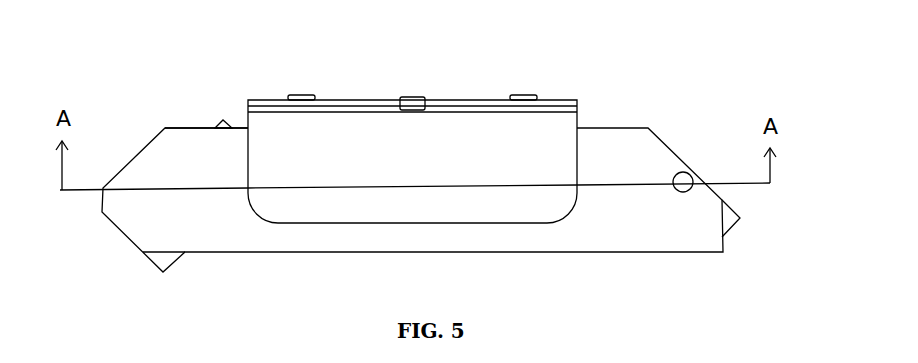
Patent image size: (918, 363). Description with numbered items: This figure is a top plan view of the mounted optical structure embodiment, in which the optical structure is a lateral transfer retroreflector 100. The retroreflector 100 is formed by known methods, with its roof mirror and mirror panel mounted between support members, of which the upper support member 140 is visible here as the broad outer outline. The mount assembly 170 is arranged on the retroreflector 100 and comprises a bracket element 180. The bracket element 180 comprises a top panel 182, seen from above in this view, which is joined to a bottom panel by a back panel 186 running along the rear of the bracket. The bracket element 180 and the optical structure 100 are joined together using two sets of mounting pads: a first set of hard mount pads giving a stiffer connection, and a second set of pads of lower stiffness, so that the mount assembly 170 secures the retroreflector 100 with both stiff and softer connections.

The lateral transfer retroreflector 100 is at (175, 127).
The upper support member 140 is at (642, 233).
The mount assembly 170 is at (342, 125).
The bracket element 180 is at (258, 98).
The top panel 182 is at (513, 160).
The back panel 186 is at (480, 100).